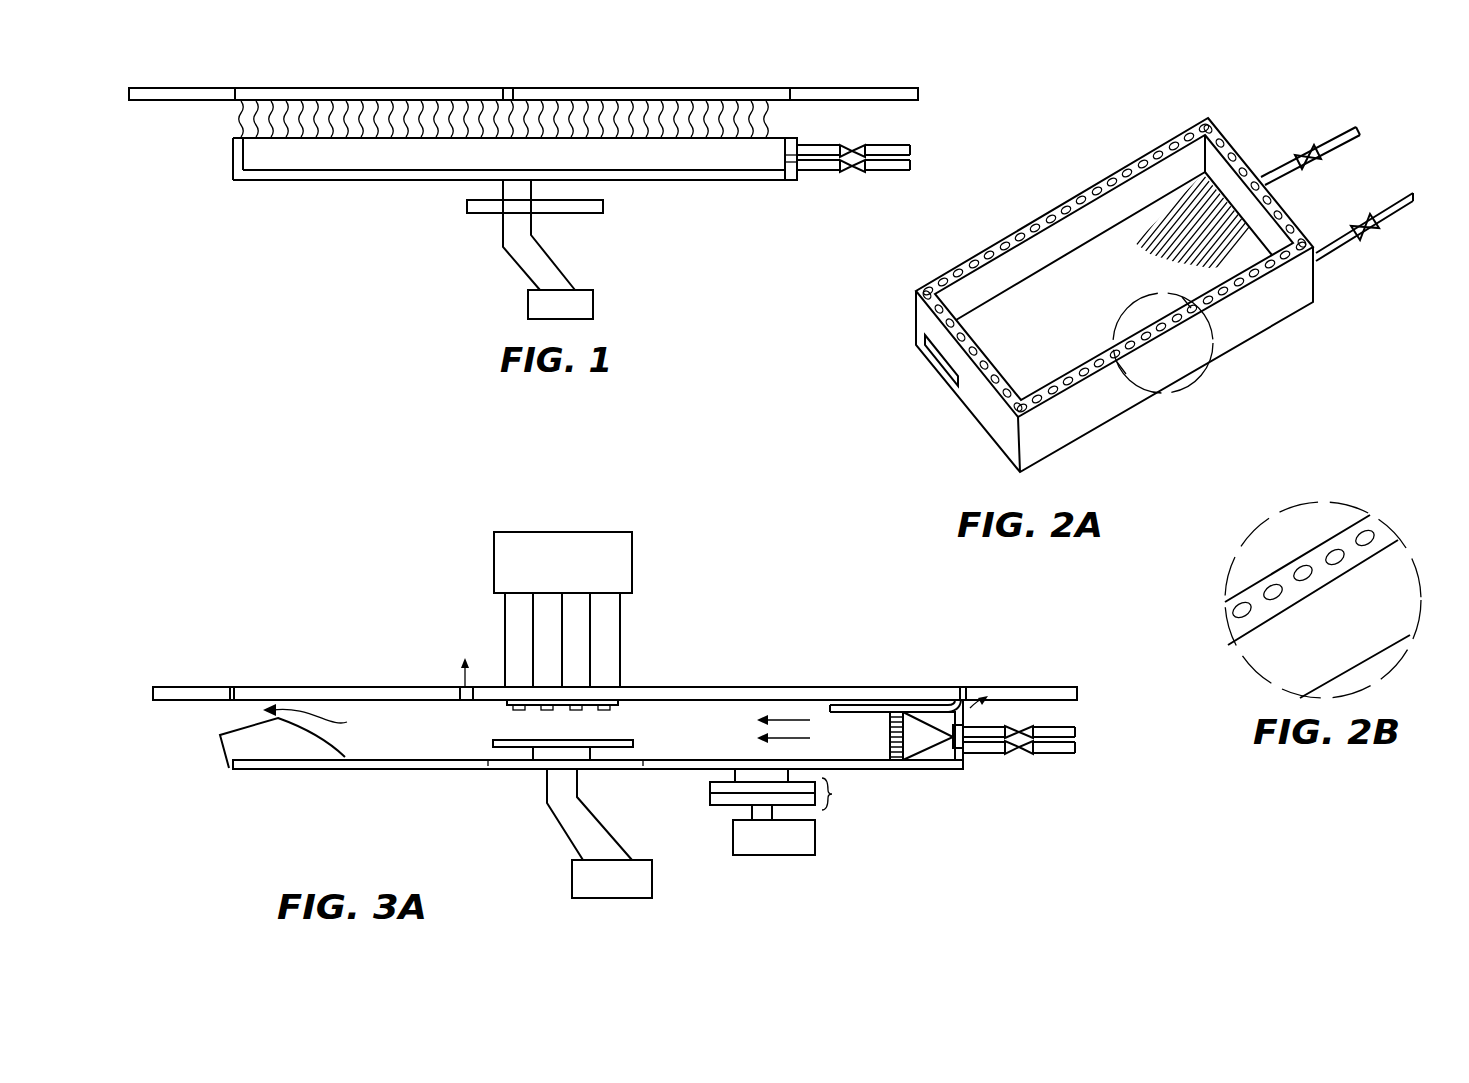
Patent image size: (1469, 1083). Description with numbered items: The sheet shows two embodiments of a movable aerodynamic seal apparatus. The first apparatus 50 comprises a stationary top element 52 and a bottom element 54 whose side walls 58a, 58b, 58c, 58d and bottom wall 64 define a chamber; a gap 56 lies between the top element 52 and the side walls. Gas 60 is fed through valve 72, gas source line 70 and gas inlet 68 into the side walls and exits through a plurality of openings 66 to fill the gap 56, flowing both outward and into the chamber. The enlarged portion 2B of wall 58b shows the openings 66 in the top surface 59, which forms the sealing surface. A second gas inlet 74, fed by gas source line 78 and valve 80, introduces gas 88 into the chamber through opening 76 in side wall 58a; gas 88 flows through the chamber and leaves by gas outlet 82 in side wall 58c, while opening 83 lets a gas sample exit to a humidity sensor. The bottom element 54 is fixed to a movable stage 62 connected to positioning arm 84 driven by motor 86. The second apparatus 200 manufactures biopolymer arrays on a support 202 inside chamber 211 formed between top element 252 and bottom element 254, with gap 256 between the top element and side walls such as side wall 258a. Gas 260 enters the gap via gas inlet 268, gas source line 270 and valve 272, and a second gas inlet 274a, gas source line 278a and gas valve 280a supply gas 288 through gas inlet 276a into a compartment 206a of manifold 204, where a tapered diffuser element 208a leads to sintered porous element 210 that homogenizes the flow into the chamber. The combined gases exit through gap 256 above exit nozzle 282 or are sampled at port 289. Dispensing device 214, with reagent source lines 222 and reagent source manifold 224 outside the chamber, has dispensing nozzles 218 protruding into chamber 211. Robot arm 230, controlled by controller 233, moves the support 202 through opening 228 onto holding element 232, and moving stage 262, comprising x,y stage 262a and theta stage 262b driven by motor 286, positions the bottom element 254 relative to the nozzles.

In FIG. 1, the apparatus 50 is at (198, 196).
In FIG. 1, the top element 52 is at (740, 88).
In FIG. 1, the bottom element 54 is at (725, 180).
In FIG. 2A, the bottom element 54 is at (902, 283).
In FIG. 1, the gap 56 is at (237, 114).
In FIG. 1, the side wall 58a is at (792, 180).
In FIG. 2A, the side wall 58a is at (1283, 208).
In FIG. 1, the side wall 58b is at (285, 170).
In FIG. 2A, the side wall 58b is at (1265, 305).
In FIG. 2B, the side wall 58b is at (1397, 570).
In FIG. 1, the side wall 58c is at (233, 160).
In FIG. 2A, the side wall 58c is at (985, 395).
In FIG. 2A, the side wall 58d is at (1027, 226).
In FIG. 2A, the top surface 59 is at (1052, 380).
In FIG. 2B, the top surface 59 is at (1343, 537).
In FIG. 1, the gas 60 is at (498, 116).
In FIG. 1, the movable stage 62 is at (595, 213).
In FIG. 2A, the bottom wall 64 is at (1108, 297).
In FIG. 2A, the openings 66 is at (1222, 138).
In FIG. 2B, the openings 66 is at (1303, 582).
In FIG. 1, the gas inlet 68 is at (815, 172).
In FIG. 2A, the gas inlet 68 is at (1330, 258).
In FIG. 1, the gas source line 70 is at (895, 172).
In FIG. 2A, the gas source line 70 is at (1398, 228).
In FIG. 1, the valve 72 is at (855, 172).
In FIG. 2A, the valve 72 is at (1370, 238).
In FIG. 1, the second gas inlet 74 is at (822, 148).
In FIG. 2A, the second gas inlet 74 is at (1270, 176).
In FIG. 2A, the opening 76 is at (1228, 220).
In FIG. 1, the gas source line 78 is at (908, 145).
In FIG. 2A, the gas source line 78 is at (1352, 124).
In FIG. 1, the valve 80 is at (862, 148).
In FIG. 2A, the valve 80 is at (1305, 148).
In FIG. 2A, the gas outlet 82 is at (936, 360).
In FIG. 1, the opening 83 is at (508, 88).
In FIG. 1, the positioning arm 84 is at (522, 251).
In FIG. 1, the motor 86 is at (582, 305).
In FIG. 2A, the gas 88 is at (1140, 240).
In FIG. 2A, the enlarged portion 2B is at (1165, 393).
In FIG. 3A, the apparatus 200 is at (315, 620).
In FIG. 3A, the support 202 is at (633, 743).
In FIG. 3A, the manifold 204 is at (948, 765).
In FIG. 3A, the compartment 206a is at (932, 745).
In FIG. 3A, the diffuser element 208a is at (962, 698).
In FIG. 3A, the porous element 210 is at (893, 745).
In FIG. 3A, the chamber 211 is at (425, 745).
In FIG. 3A, the dispensing device 214 is at (740, 585).
In FIG. 3A, the dispensing nozzles 218 is at (548, 711).
In FIG. 3A, the reagent source lines 222 is at (590, 662).
In FIG. 3A, the reagent source manifold 224 is at (625, 553).
In FIG. 3A, the opening 228 is at (485, 770).
In FIG. 3A, the robot arm 230 is at (560, 790).
In FIG. 3A, the holding element 232 is at (560, 752).
In FIG. 3A, the controller 233 is at (580, 888).
In FIG. 3A, the top element 252 is at (320, 687).
In FIG. 3A, the bottom element 254 is at (360, 772).
In FIG. 3A, the gap 256 is at (231, 686).
In FIG. 3A, the side wall 258a is at (965, 762).
In FIG. 3A, the gas 260 is at (985, 700).
In FIG. 3A, the moving stage 262 is at (791, 794).
In FIG. 3A, the x,y stage 262a is at (725, 800).
In FIG. 3A, the theta stage 262b is at (715, 785).
In FIG. 3A, the gas inlet 268 is at (990, 754).
In FIG. 3A, the gas source line 270 is at (1060, 755).
In FIG. 3A, the valve 272 is at (1030, 754).
In FIG. 3A, the second gas inlet 274a is at (1000, 735).
In FIG. 3A, the gas inlet 276a is at (925, 708).
In FIG. 3A, the gas source line 278a is at (1057, 727).
In FIG. 3A, the gas valve 280a is at (1030, 732).
In FIG. 3A, the exit nozzle 282 is at (220, 752).
In FIG. 3A, the motor 286 is at (800, 850).
In FIG. 3A, the gas 288 is at (462, 662).
In FIG. 3A, the port 289 is at (461, 689).